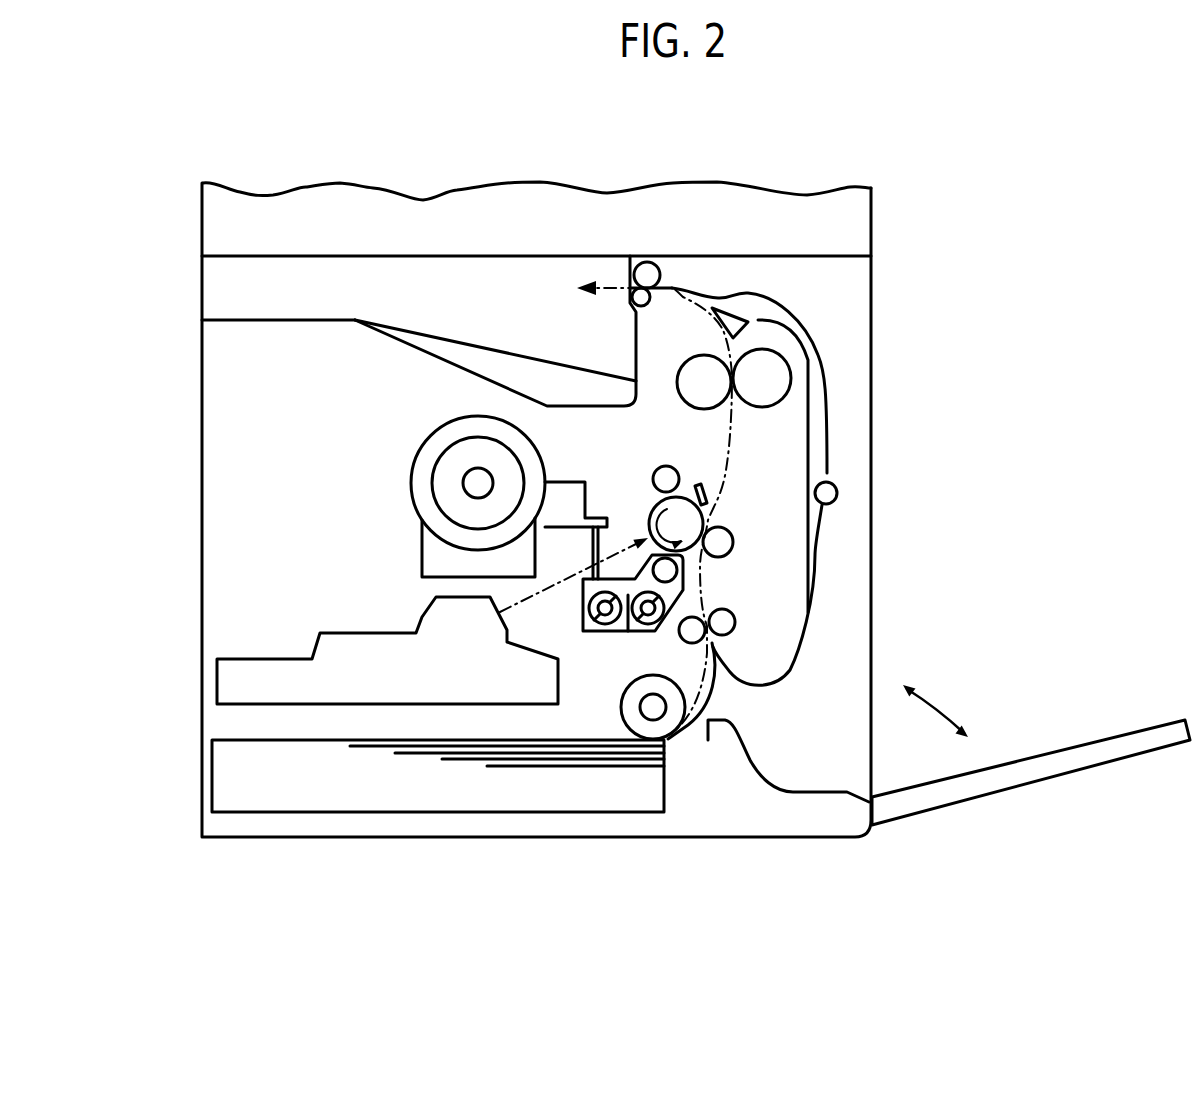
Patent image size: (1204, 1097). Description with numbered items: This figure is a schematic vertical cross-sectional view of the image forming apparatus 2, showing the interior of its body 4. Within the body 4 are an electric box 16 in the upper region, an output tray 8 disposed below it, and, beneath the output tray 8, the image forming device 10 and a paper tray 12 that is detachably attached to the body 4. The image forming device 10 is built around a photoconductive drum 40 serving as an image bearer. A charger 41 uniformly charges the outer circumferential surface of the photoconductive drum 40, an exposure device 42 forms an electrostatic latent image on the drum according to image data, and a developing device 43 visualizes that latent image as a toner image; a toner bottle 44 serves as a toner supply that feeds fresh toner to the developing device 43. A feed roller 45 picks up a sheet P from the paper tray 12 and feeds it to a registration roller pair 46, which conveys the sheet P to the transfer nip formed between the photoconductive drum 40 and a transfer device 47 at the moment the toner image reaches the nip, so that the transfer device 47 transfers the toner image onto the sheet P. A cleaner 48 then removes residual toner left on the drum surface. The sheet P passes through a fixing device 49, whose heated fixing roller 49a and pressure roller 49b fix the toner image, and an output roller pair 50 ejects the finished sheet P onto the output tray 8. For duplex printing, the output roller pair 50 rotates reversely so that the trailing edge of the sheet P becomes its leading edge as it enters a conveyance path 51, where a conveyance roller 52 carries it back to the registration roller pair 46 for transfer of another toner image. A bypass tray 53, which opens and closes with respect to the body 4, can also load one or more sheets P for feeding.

The image forming apparatus 2 is at (741, 142).
The body 4 is at (201, 540).
The output tray 8 is at (505, 356).
The image forming device 10 is at (344, 507).
The paper tray 12 is at (464, 750).
The sheet P is at (575, 740).
The electric box 16 is at (863, 222).
The photoconductive drum 40 is at (652, 512).
The charger 41 is at (662, 467).
The exposure device 42 is at (368, 632).
The developing device 43 is at (583, 600).
The toner bottle 44 is at (425, 440).
The feed roller 45 is at (630, 684).
The registration roller pair 46 is at (695, 615).
The transfer device 47 is at (733, 540).
The cleaner 48 is at (702, 483).
The fixing device 49 is at (778, 381).
The fixing roller 49a is at (692, 355).
The pressure roller 49b is at (764, 407).
The output roller pair 50 is at (650, 300).
The conveyance path 51 is at (822, 412).
The conveyance roller 52 is at (838, 493).
The bypass tray 53 is at (1068, 750).